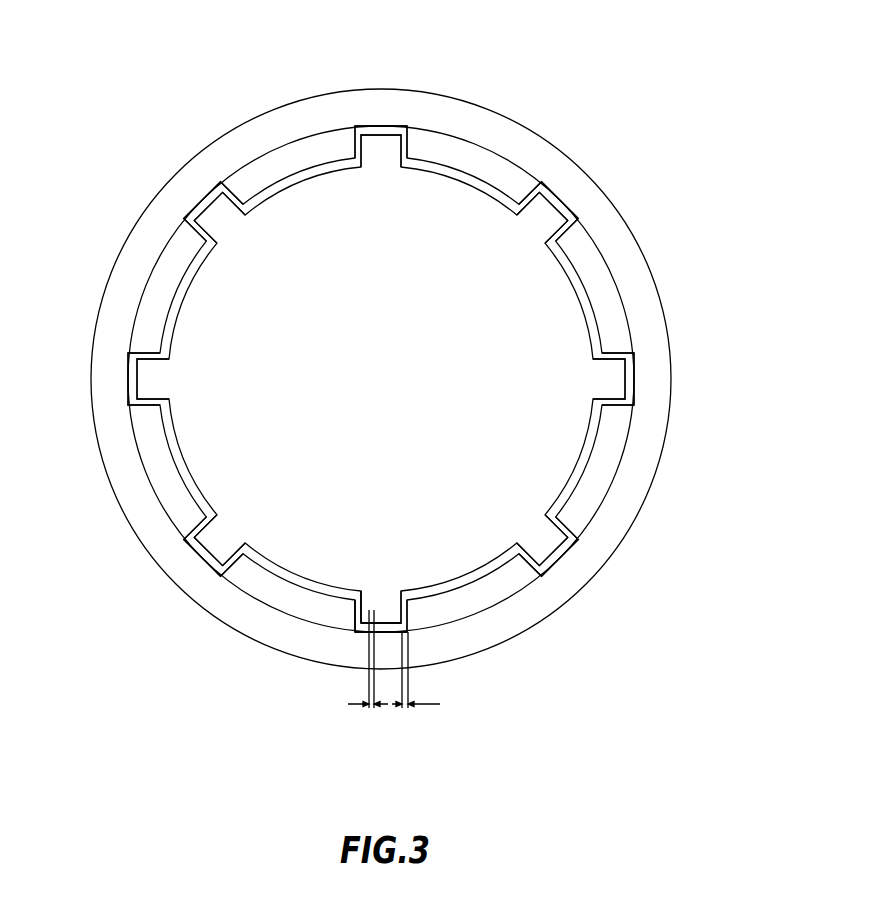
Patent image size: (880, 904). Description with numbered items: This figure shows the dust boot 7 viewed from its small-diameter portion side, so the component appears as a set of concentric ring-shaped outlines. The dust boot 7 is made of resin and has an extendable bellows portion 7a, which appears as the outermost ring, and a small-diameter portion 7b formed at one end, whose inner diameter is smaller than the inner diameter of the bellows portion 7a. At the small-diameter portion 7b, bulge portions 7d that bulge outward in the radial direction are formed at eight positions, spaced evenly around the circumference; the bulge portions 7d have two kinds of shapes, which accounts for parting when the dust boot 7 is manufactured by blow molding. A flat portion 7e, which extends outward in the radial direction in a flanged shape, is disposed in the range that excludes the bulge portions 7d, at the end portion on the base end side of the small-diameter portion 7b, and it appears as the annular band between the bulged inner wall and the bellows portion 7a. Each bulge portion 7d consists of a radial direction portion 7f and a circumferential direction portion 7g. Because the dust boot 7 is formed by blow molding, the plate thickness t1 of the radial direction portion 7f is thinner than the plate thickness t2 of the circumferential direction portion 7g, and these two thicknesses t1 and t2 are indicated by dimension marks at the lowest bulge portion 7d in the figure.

The dust boot 7 is at (386, 383).
The bellows portion 7a is at (285, 132).
The small-diameter portion 7b is at (333, 172).
The bulge portion 7d is at (392, 132).
The flat portion 7e is at (452, 153).
The radial direction portion 7f is at (358, 615).
The circumferential direction portion 7g is at (385, 625).
The plate thickness of radial direction portion t1 is at (416, 670).
The plate thickness of circumferential direction portion t2 is at (366, 659).